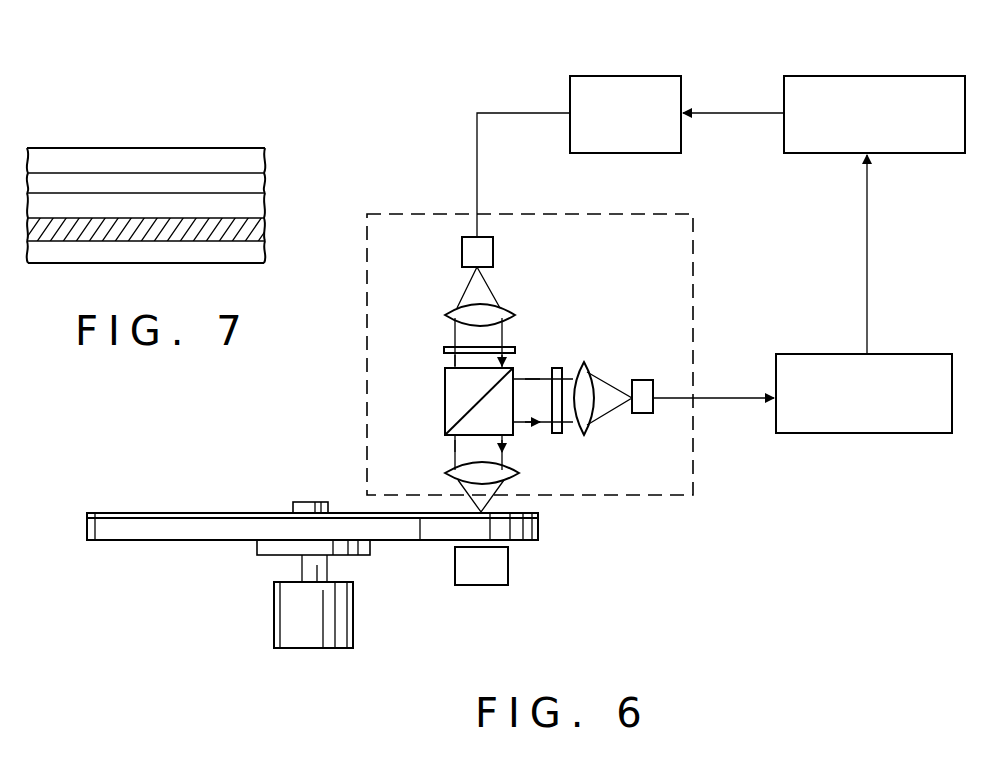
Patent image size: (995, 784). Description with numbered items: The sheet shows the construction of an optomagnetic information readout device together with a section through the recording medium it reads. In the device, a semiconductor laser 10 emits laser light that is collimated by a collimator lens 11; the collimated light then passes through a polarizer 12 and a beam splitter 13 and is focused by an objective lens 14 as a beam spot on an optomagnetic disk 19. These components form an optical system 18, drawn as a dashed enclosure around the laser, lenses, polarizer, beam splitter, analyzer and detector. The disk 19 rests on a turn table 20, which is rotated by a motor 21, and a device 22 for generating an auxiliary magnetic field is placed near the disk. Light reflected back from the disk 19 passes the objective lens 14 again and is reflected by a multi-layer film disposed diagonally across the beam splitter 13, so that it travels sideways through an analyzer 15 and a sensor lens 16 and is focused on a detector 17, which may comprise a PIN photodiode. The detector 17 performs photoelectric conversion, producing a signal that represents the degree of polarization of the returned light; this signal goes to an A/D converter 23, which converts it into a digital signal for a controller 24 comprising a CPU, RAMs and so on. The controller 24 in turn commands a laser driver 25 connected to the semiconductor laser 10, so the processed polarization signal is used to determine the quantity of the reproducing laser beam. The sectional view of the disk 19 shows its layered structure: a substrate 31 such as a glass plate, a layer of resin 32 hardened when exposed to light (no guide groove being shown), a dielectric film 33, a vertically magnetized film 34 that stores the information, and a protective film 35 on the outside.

In FIG. 6, the semiconductor laser 10 is at (493, 252).
In FIG. 6, the collimator lens 11 is at (450, 315).
In FIG. 6, the polarizer 12 is at (444, 350).
In FIG. 6, the beam splitter 13 is at (445, 392).
In FIG. 6, the objective lens 14 is at (452, 475).
In FIG. 6, the analyzer 15 is at (555, 367).
In FIG. 6, the sensor lens 16 is at (586, 364).
In FIG. 6, the detector 17 is at (645, 380).
In FIG. 6, the optical system 18 is at (693, 299).
In FIG. 6, the optomagnetic disk 19 is at (137, 513).
In FIG. 6, the turn table 20 is at (137, 540).
In FIG. 6, the motor 21 is at (352, 628).
In FIG. 6, the device for generating an auxiliary magnetic field 22 is at (497, 565).
In FIG. 6, the A/D converter 23 is at (902, 354).
In FIG. 6, the controller 24 is at (910, 76).
In FIG. 6, the laser driver 25 is at (637, 76).
In FIG. 7, the substrate 31 is at (258, 158).
In FIG. 7, the resin hardened when exposed to light 32 is at (256, 185).
In FIG. 7, the dielectric film 33 is at (254, 208).
In FIG. 7, the vertically magnetized film 34 is at (250, 230).
In FIG. 7, the protective film 35 is at (248, 251).